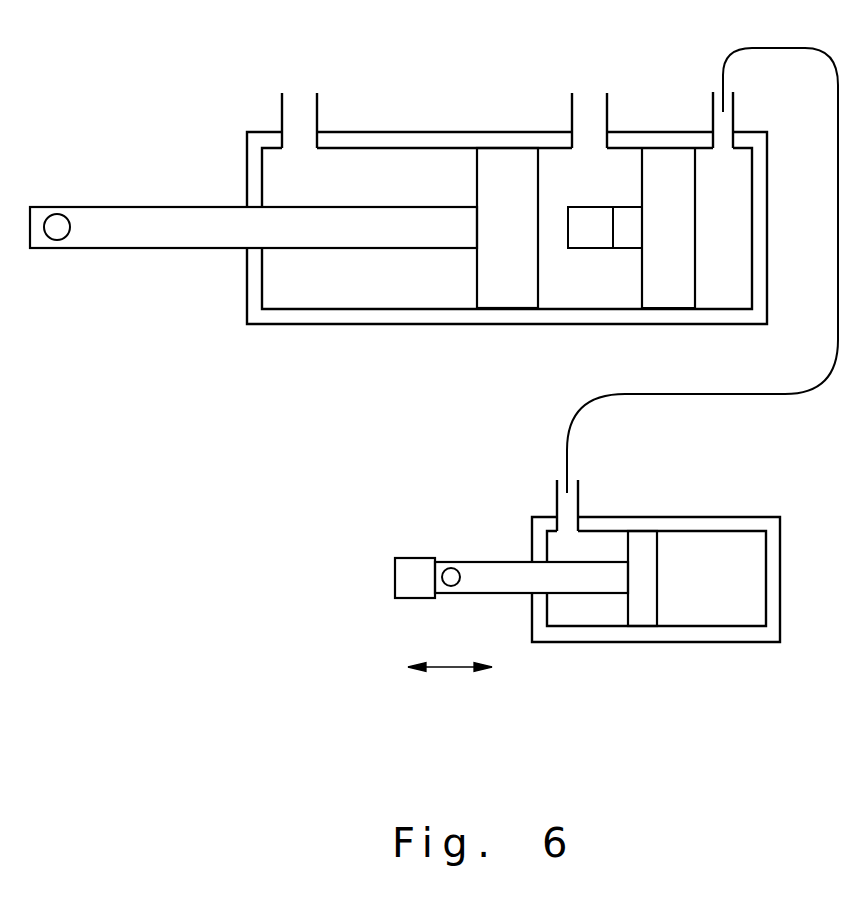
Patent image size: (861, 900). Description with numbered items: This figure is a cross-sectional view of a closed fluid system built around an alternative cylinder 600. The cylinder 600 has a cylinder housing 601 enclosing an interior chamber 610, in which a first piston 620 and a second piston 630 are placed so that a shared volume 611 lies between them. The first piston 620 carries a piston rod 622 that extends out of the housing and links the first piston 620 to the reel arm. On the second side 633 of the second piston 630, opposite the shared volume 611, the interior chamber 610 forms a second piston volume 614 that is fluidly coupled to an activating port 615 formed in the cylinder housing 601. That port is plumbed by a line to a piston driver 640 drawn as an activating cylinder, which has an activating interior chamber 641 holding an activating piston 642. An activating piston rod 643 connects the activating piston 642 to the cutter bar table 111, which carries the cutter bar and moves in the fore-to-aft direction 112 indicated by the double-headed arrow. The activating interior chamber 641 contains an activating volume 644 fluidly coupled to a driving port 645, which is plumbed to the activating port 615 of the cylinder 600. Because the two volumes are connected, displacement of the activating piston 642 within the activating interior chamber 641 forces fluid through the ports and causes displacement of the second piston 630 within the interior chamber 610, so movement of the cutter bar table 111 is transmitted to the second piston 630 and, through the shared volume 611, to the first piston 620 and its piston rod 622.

The cylinder 600 is at (242, 105).
The cylinder housing 601 is at (418, 136).
The interior chamber 610 is at (557, 152).
The shared volume 611 is at (610, 194).
The second piston volume 614 is at (745, 224).
The activating port 615 is at (722, 137).
The first piston 620 is at (493, 158).
The piston rod 622 is at (183, 209).
The second piston 630 is at (654, 157).
The second side 633 is at (695, 262).
The piston driver 640 is at (785, 493).
The activating interior chamber 641 is at (617, 538).
The activating piston 642 is at (653, 545).
The activating piston rod 643 is at (513, 565).
The activating volume 644 is at (605, 559).
The driving port 645 is at (566, 521).
The cutter bar table 111 is at (415, 558).
The fore-to-aft direction 112 is at (450, 667).